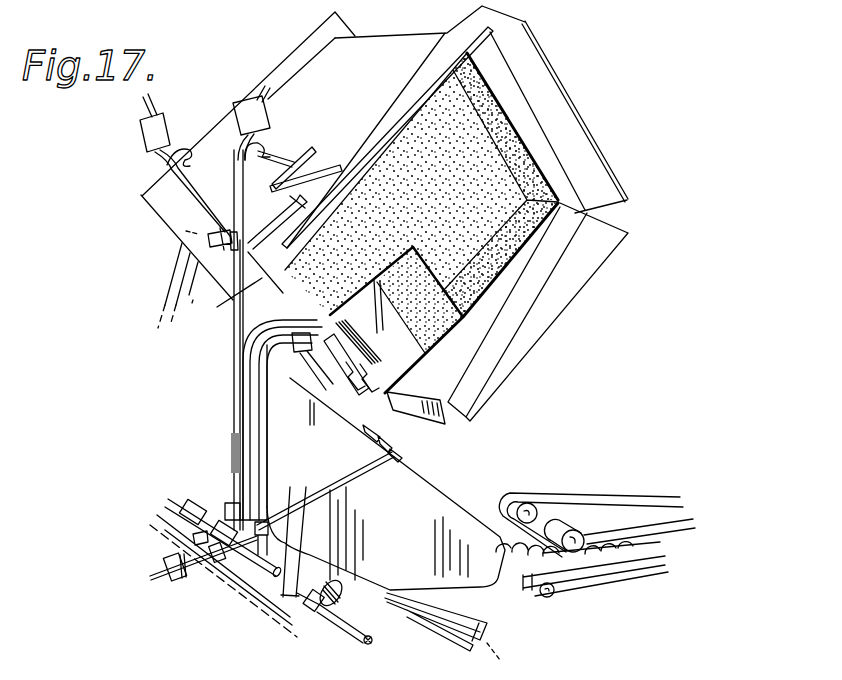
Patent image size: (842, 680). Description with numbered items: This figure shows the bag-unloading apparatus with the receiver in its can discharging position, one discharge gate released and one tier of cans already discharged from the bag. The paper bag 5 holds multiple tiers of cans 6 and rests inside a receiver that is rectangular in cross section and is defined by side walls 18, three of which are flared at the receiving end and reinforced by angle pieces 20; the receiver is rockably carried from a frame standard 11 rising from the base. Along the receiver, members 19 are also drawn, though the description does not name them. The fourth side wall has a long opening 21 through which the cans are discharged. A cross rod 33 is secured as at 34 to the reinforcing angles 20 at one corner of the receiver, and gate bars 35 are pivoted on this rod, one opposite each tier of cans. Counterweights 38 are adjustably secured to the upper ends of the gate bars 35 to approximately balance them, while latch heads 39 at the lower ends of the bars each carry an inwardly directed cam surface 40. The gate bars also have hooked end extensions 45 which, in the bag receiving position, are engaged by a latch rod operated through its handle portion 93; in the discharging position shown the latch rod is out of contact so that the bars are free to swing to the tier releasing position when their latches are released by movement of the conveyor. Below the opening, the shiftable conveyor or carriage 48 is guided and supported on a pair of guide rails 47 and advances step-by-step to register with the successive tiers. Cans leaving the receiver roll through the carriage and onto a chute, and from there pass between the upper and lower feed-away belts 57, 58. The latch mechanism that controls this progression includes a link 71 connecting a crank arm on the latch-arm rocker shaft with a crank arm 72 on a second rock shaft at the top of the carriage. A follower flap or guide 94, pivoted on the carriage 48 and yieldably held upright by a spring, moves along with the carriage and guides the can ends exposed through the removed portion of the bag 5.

The bag 5 is at (530, 163).
The cans 6 is at (577, 553).
The frame standard 11 is at (176, 268).
The side walls 18 is at (386, 38).
The rail 19 is at (467, 32).
The reinforcing angle pieces 20 is at (292, 57).
The long opening 21 is at (317, 324).
The cross rod 33 is at (228, 225).
The securing means for cross rod 34 is at (263, 232).
The gate bars 35 is at (233, 313).
The counterweights 38 is at (143, 133).
The latch heads 39 is at (227, 508).
The cam surface 40 is at (243, 520).
The hooked end extensions 45 is at (193, 133).
The guide rails 47 is at (440, 618).
The shiftable conveyor or carriage 48 is at (453, 485).
The upper feed-away belt 57 is at (557, 497).
The lower feed-away belt 58 is at (605, 577).
The link 71 is at (360, 483).
The crank arm 72 is at (397, 453).
The handle portion 93 is at (313, 167).
The follower flap or guide 94 is at (430, 352).